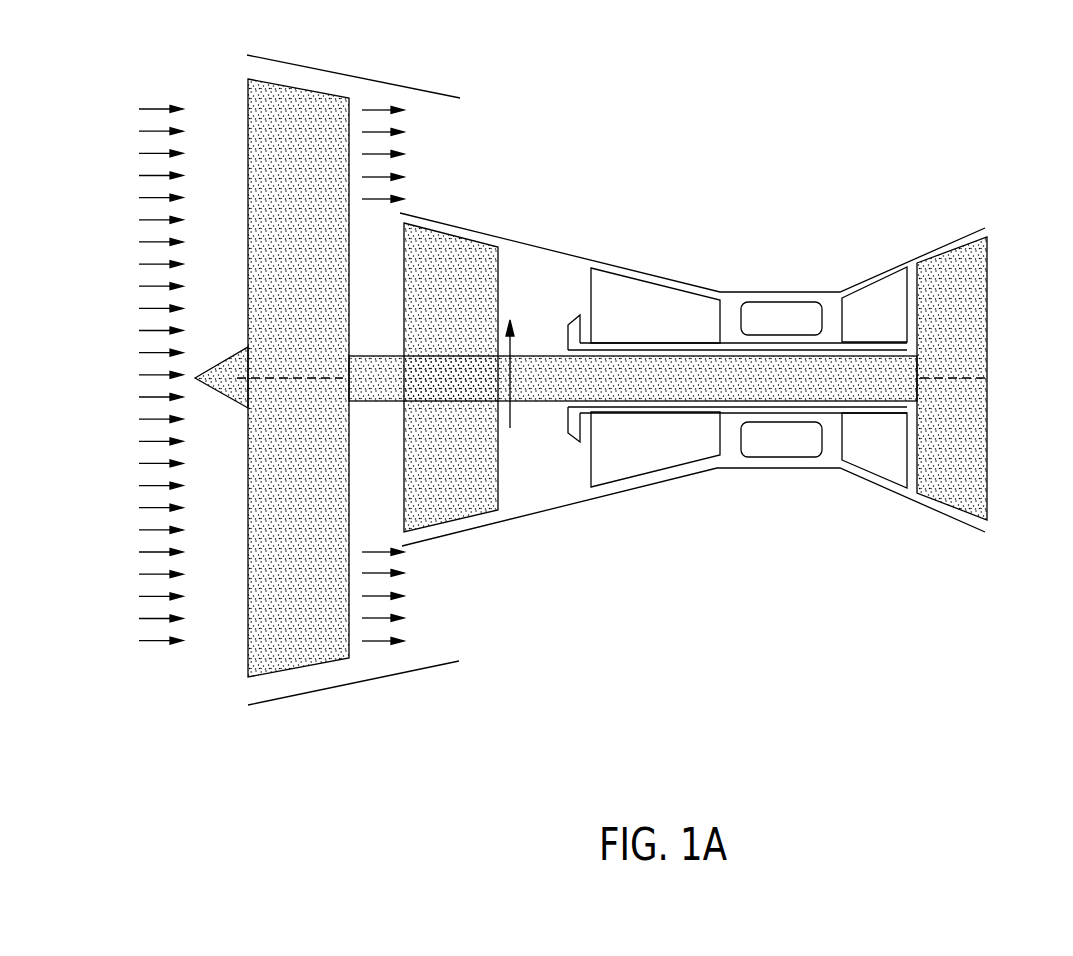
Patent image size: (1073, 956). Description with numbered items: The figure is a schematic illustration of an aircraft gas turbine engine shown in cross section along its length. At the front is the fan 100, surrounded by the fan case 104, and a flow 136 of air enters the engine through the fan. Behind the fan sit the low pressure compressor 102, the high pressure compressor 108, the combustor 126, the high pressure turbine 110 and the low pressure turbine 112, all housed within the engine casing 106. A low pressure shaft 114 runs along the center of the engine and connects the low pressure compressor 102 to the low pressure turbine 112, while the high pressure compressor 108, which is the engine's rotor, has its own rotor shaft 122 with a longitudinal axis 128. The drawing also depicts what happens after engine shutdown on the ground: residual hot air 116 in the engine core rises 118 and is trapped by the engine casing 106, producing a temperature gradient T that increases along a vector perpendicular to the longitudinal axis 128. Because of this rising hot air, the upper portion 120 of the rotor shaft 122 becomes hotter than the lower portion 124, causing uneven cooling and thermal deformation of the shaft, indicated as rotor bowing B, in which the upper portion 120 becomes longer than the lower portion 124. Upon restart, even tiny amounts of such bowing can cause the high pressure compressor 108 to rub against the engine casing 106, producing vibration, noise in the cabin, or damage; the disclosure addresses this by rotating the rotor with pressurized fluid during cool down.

The fan 100 is at (265, 303).
The low pressure compressor 102 is at (458, 218).
The fan case 104 is at (345, 73).
The engine casing 106 is at (477, 528).
The high pressure compressor 108 is at (655, 272).
The high pressure turbine 110 is at (888, 280).
The low pressure turbine 112 is at (972, 496).
The low pressure shaft 114 is at (770, 372).
The residual hot air 116 is at (540, 262).
The rising of hot air 118 is at (533, 326).
The upper portion of the rotor shaft 120 is at (650, 340).
The rotor shaft 122 is at (900, 349).
The lower portion of the rotor shaft 124 is at (650, 410).
The combustor 126 is at (793, 480).
The longitudinal axis 128 is at (972, 387).
The flow of air 136 is at (153, 108).
The temperature gradient T is at (507, 352).
The rotor bowing B is at (898, 335).